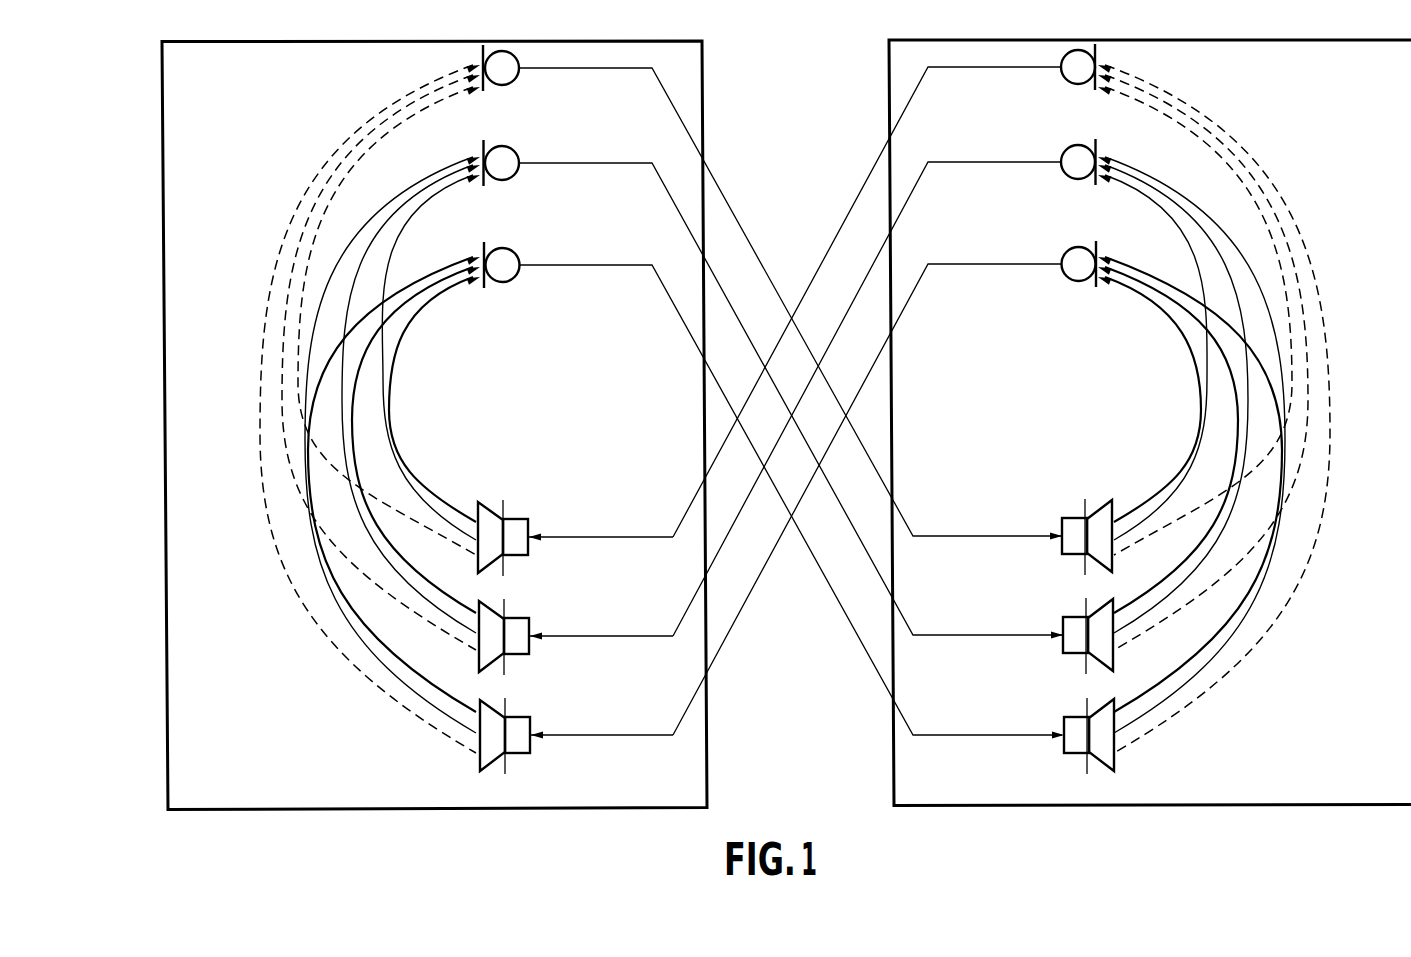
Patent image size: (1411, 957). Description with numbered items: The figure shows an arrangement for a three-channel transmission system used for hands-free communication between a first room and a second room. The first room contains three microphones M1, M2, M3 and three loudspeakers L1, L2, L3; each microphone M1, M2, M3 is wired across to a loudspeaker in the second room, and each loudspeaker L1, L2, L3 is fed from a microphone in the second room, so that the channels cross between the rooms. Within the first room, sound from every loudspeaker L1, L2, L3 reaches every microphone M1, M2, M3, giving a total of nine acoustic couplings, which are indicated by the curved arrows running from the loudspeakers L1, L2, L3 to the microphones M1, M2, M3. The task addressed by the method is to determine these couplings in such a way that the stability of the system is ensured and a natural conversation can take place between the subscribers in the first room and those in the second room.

The microphone M1 is at (516, 73).
The microphone M2 is at (517, 168).
The microphone M3 is at (517, 270).
The loudspeaker L1 is at (575, 538).
The loudspeaker L2 is at (576, 637).
The loudspeaker L3 is at (576, 736).